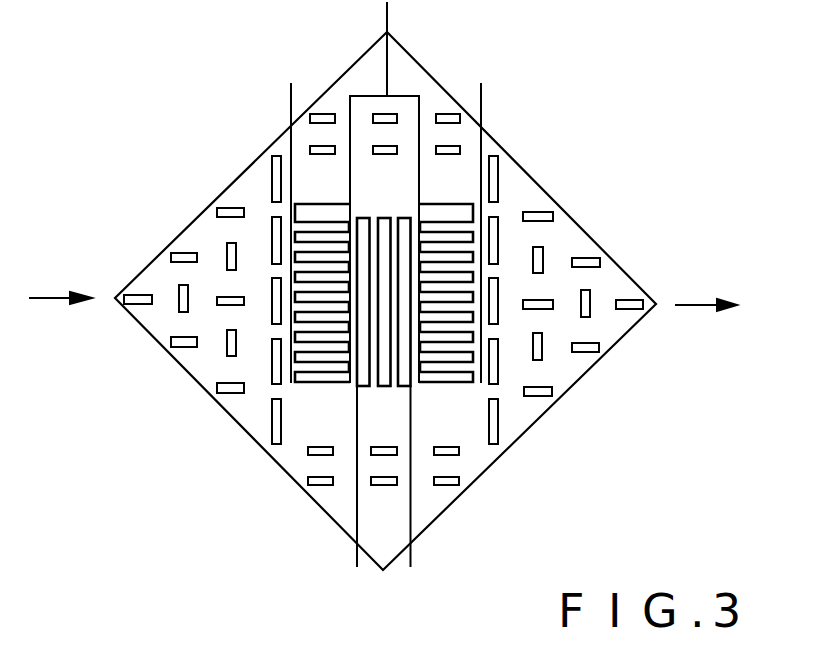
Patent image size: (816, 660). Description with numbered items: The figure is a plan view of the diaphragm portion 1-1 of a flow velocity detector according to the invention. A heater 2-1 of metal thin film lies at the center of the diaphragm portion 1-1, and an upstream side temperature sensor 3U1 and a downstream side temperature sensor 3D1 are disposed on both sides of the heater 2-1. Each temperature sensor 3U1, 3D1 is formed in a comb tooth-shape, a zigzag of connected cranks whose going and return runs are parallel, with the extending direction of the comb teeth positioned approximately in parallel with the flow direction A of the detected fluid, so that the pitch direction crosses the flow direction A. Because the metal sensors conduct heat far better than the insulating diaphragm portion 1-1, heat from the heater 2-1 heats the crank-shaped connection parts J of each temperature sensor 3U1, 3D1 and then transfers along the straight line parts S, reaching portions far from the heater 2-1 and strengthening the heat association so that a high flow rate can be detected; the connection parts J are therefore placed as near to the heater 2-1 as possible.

The diaphragm portion 1-1 is at (535, 193).
The heater 2-1 is at (386, 216).
The upstream side temperature sensor 3U1 is at (313, 347).
The downstream side temperature sensor 3D1 is at (440, 355).
The straight line parts S is at (353, 385).
The crank-shaped connection parts J is at (320, 383).
The flow direction A is at (383, 283).